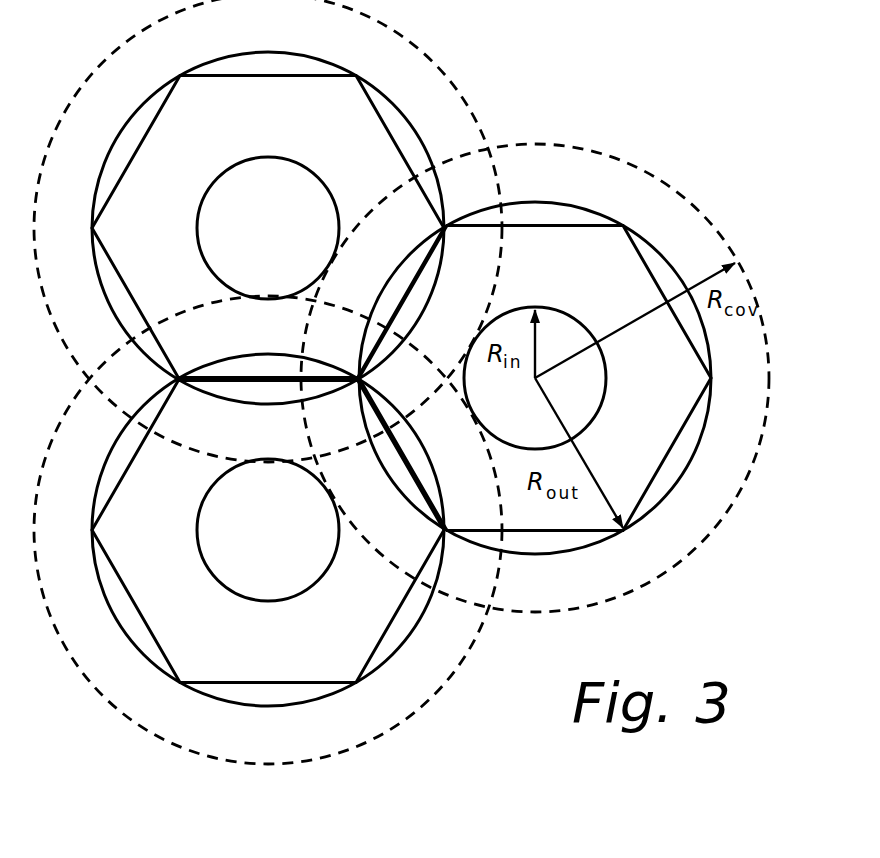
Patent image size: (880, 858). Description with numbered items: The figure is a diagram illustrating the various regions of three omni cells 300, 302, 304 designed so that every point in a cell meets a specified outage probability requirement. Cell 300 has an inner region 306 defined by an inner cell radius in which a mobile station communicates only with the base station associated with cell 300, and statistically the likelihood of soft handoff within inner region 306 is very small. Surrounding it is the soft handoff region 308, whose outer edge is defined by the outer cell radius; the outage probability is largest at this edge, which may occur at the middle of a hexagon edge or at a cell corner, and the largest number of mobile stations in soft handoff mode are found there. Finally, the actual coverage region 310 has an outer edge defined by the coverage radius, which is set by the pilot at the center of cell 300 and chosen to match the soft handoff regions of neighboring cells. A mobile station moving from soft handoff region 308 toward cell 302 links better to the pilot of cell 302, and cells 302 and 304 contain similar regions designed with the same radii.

The cell 300 is at (694, 393).
The cell 302 is at (176, 546).
The cell 304 is at (176, 243).
The inner region 306 is at (550, 333).
The soft handoff region 308 is at (648, 437).
The actual coverage region 310 is at (740, 383).